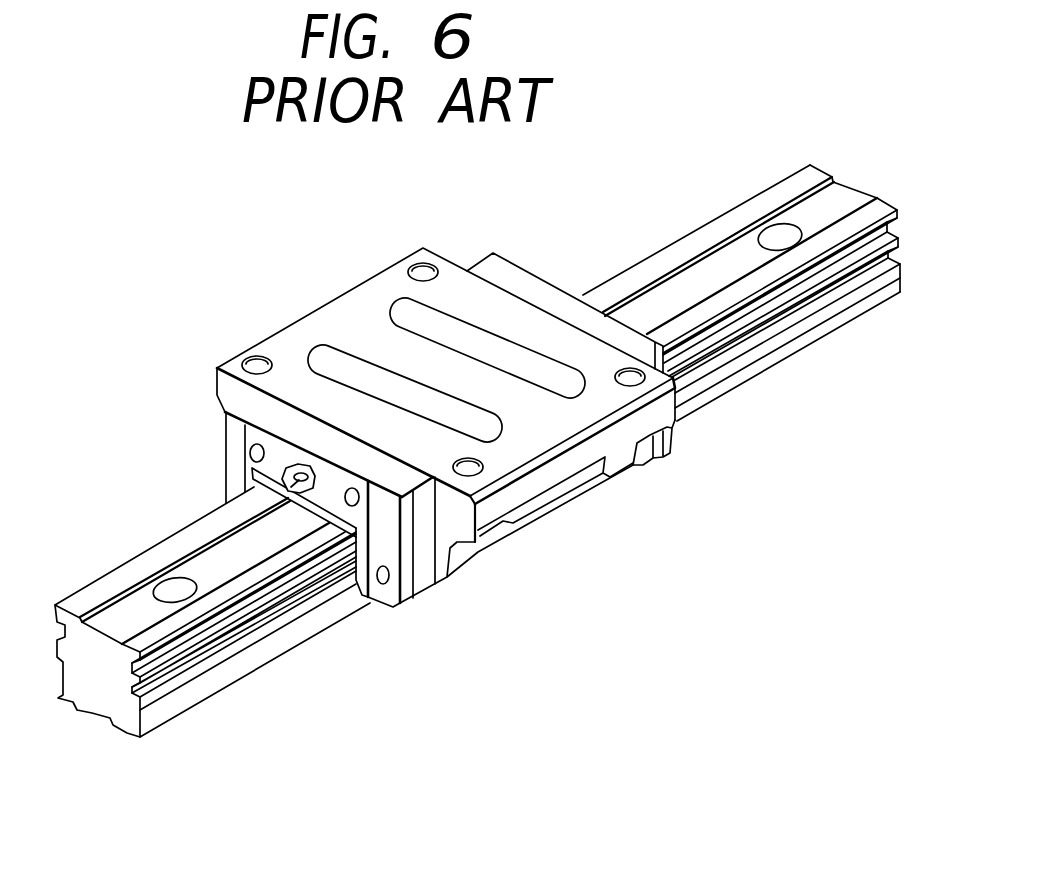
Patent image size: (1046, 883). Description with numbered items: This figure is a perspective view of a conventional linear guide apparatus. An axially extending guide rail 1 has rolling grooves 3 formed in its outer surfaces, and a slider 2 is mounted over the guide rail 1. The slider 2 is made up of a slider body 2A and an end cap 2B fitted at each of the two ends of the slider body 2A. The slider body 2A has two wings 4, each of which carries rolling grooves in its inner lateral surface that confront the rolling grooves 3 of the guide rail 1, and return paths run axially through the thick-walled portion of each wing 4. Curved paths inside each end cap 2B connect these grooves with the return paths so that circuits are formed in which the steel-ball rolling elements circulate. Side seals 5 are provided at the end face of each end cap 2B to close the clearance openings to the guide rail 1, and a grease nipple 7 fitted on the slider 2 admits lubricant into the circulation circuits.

The guide rail 1 is at (477, 464).
The slider 2 is at (412, 435).
The slider body 2A is at (360, 311).
The end cap 2B is at (488, 268).
The rolling grooves 3 is at (170, 680).
The wings 4 is at (495, 542).
The side seals 5 is at (366, 597).
The grease nipple 7 is at (283, 495).